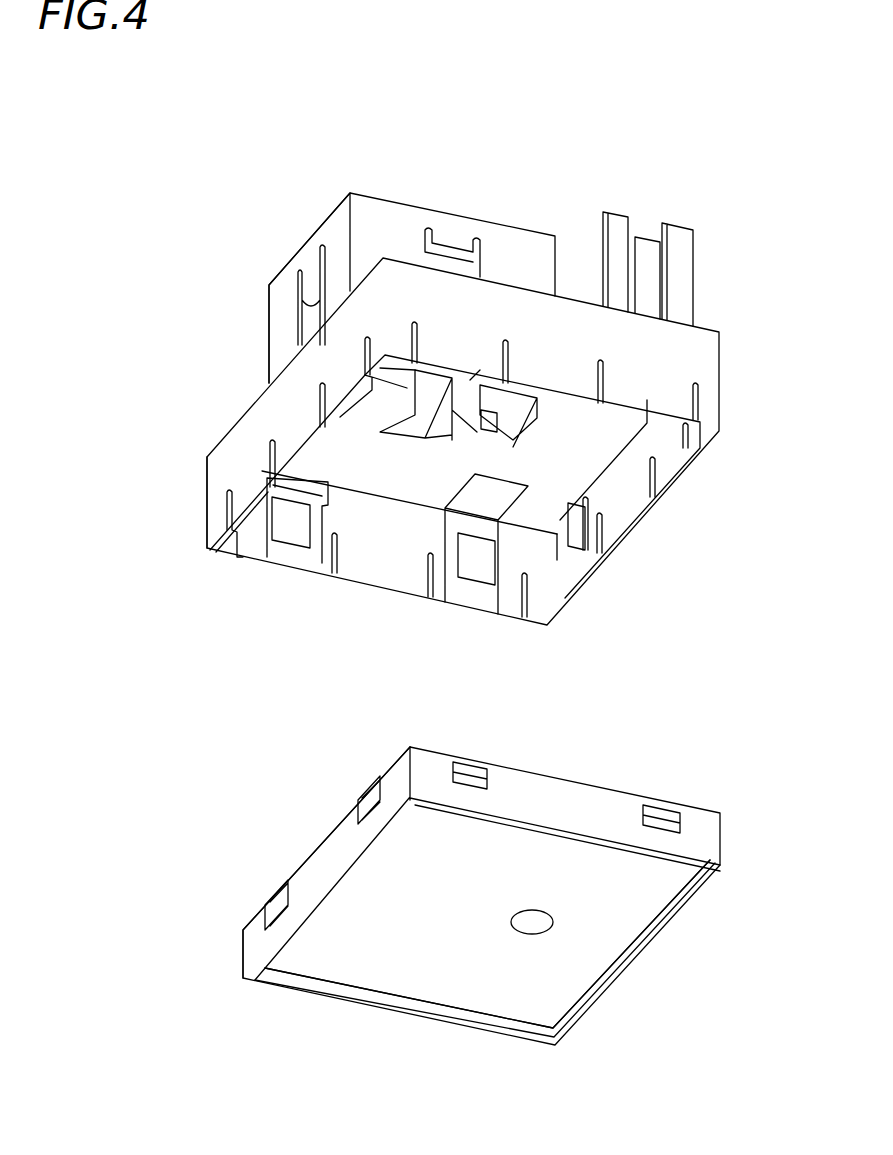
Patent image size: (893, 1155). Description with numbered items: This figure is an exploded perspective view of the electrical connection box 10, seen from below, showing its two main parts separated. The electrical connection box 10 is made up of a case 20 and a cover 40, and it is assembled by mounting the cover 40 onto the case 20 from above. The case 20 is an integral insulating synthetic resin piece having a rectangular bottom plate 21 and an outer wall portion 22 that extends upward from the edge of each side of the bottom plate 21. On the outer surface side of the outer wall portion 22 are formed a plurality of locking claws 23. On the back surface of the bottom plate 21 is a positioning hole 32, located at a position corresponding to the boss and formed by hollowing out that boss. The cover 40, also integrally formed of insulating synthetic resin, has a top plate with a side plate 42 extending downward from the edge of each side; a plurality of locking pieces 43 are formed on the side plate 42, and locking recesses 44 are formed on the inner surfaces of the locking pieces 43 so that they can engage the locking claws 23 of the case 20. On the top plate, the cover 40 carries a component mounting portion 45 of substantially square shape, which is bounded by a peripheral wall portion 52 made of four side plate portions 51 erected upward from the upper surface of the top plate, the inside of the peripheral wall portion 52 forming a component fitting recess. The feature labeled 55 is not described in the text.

The electrical connection box 10 is at (117, 355).
The case 20 is at (270, 1022).
The bottom plate 21 is at (392, 965).
The outer wall portion 22 is at (243, 940).
The locking claws 23 is at (265, 905).
The positioning hole 32 is at (533, 922).
The cover 40 is at (185, 536).
The side plate 42 is at (205, 490).
The locking pieces 43 is at (478, 340).
The locking recesses 44 is at (285, 525).
The component mounting portion 45 is at (318, 212).
The side plate portions 51 is at (396, 222).
The peripheral wall portion 52 is at (252, 290).
The groove 55 is at (453, 243).